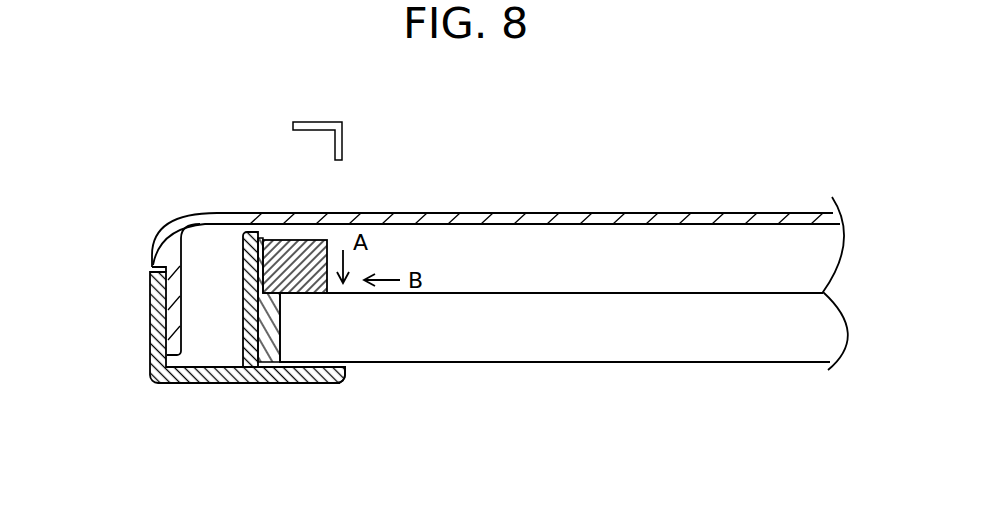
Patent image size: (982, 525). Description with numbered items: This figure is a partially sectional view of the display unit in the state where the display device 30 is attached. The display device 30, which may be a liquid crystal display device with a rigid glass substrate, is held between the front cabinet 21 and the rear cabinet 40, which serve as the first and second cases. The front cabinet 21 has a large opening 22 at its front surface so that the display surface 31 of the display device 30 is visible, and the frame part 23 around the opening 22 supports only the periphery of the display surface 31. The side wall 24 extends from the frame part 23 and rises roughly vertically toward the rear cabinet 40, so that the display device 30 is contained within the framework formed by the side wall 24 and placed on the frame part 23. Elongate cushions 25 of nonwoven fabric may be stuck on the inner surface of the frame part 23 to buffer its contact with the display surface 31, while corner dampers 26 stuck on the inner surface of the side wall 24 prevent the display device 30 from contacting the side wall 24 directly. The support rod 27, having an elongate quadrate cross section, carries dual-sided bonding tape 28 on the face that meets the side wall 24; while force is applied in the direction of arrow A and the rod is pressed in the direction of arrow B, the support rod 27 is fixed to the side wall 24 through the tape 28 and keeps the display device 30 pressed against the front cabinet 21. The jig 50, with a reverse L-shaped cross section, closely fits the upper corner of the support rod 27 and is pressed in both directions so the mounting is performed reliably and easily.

The front cabinet 21 is at (152, 363).
The opening 22 is at (450, 370).
The frame part 23 is at (340, 382).
The side wall 24 is at (241, 233).
The cushions 25 is at (293, 383).
The corner dampers 26 is at (242, 297).
The support rod 27 is at (303, 240).
The dual-sided bonding tape 28 is at (264, 240).
The display device 30 is at (670, 327).
The display surface 31 is at (592, 362).
The rear cabinet 40 is at (593, 220).
The jig 50 is at (330, 122).